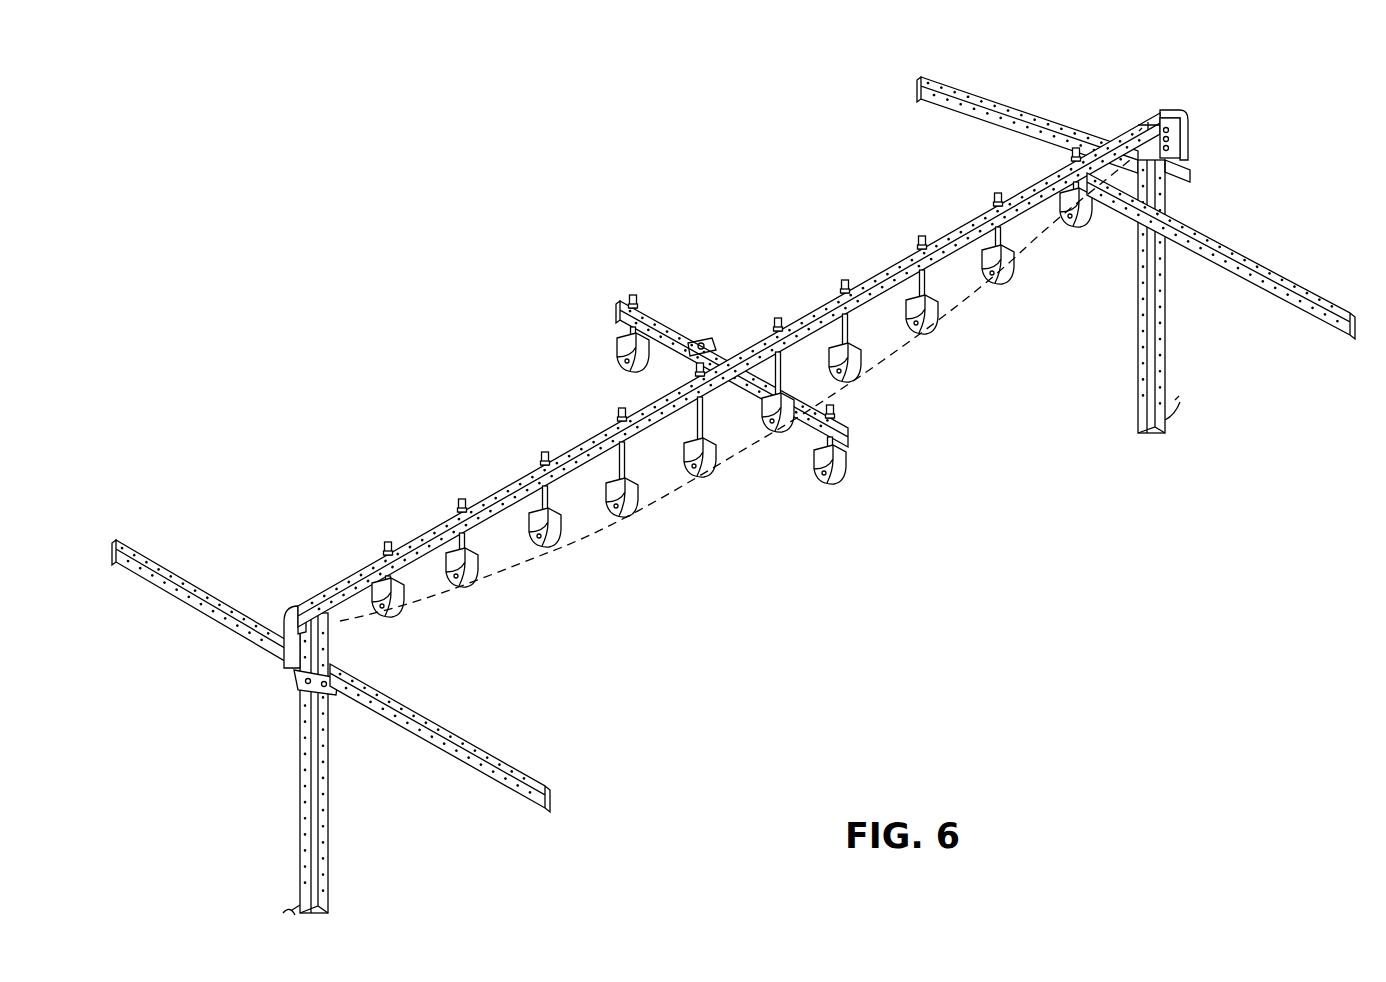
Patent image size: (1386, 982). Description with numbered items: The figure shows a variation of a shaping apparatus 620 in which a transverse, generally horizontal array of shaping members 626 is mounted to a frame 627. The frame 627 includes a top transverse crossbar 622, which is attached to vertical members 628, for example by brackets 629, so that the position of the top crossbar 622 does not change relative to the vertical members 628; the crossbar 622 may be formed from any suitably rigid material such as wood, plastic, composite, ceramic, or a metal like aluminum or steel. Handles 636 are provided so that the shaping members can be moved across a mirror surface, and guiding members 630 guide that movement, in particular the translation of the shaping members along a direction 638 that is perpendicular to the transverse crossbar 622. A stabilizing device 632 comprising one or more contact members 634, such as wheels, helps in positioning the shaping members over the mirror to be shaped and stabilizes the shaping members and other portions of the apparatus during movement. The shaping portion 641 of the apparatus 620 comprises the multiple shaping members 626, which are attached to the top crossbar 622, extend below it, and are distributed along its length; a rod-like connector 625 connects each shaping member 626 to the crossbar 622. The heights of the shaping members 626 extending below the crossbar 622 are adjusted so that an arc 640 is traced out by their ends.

The shaping apparatus 620 is at (461, 236).
The top transverse crossbar 622 is at (962, 224).
The connector 625 is at (618, 468).
The shaping member 626 is at (632, 502).
The frame 627 is at (297, 603).
The vertical member 628 is at (305, 805).
The bracket 629 is at (1150, 147).
The guiding member 630 is at (1243, 262).
The stabilizing device 632 is at (845, 428).
The contact member 634 is at (838, 470).
The handle 636 is at (285, 658).
The direction 638 is at (1076, 568).
The arc 640 is at (528, 565).
The shaping portion 641 is at (935, 298).